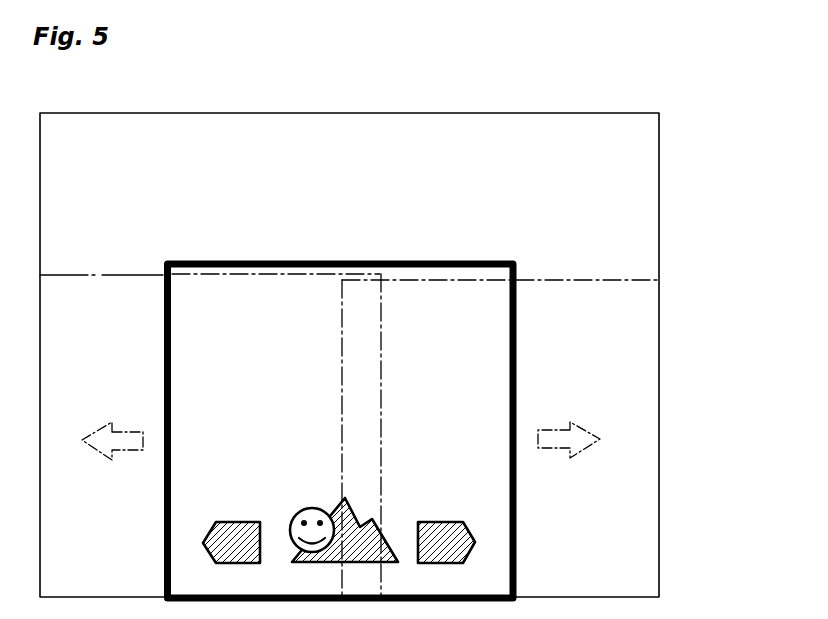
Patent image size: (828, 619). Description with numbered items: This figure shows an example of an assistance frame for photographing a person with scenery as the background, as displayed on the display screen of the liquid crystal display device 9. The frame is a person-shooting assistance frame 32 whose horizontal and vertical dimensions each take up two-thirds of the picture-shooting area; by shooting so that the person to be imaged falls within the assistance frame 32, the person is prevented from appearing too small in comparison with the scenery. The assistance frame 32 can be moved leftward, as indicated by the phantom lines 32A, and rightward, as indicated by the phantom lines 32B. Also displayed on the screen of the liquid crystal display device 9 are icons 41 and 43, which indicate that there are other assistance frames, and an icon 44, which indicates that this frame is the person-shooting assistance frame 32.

The liquid crystal display device 9 is at (659, 177).
The person-shooting assistance frame 32 is at (517, 368).
The phantom lines 32A is at (105, 274).
The phantom lines 32B is at (572, 281).
The icon 41 is at (232, 530).
The icon 43 is at (440, 530).
The icon 44 is at (391, 504).